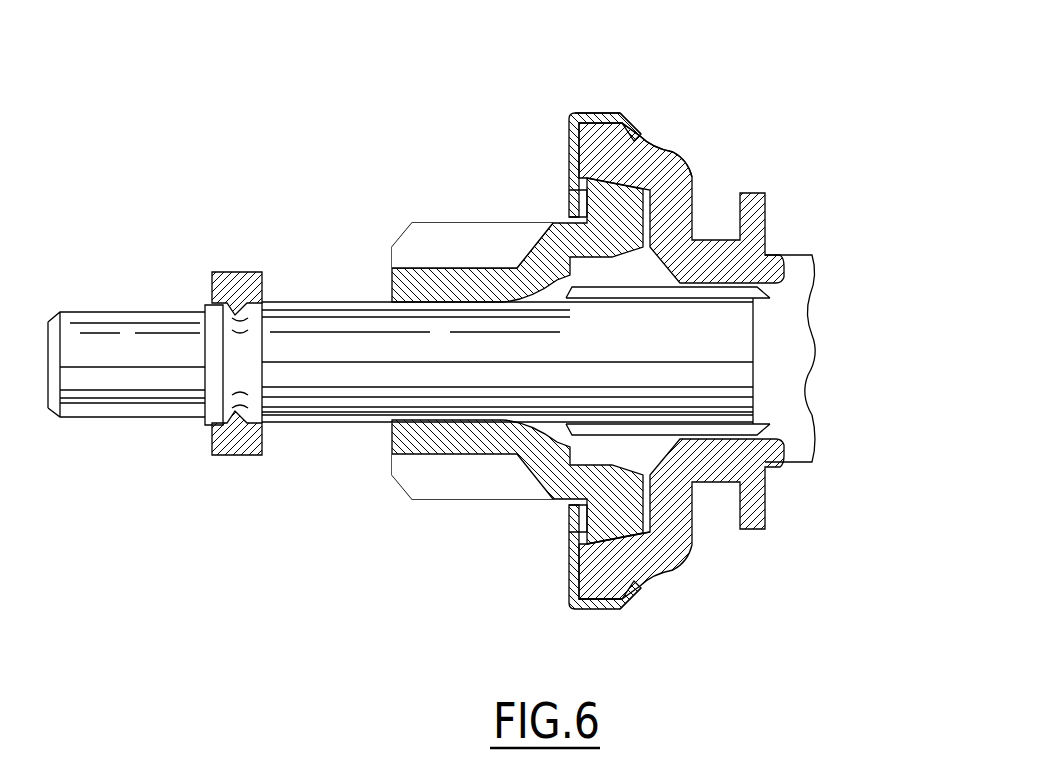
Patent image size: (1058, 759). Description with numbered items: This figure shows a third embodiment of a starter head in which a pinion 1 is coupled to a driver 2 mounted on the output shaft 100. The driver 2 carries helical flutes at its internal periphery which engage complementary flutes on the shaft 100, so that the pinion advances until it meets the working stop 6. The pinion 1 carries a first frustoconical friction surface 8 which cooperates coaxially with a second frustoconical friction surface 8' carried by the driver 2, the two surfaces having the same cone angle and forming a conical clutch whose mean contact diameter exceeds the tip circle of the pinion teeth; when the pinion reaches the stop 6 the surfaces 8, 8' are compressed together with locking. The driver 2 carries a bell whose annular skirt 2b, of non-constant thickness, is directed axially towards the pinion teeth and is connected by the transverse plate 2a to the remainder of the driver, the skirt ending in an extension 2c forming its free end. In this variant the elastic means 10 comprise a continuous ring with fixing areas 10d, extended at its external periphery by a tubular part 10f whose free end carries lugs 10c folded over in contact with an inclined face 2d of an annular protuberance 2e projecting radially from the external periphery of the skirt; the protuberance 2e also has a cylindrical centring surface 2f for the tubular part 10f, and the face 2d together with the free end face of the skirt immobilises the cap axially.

The output shaft 100 is at (141, 385).
The working stop 6 is at (240, 457).
The pinion 1 is at (428, 246).
The driver 2 is at (717, 141).
The transverse plate 2a is at (694, 176).
The annular skirt 2b is at (641, 142).
The extension of the skirt 2c is at (583, 572).
The inclined face 2d is at (637, 562).
The annular protuberance 2e is at (620, 118).
The cylindrical centring surface 2f is at (600, 605).
The first frustoconical friction surface 8 is at (632, 558).
The second frustoconical friction surface 8' is at (558, 558).
The elastic means 10 is at (572, 108).
The lugs 10c is at (642, 120).
The fixing areas 10d is at (558, 200).
The tubular part 10f is at (605, 103).